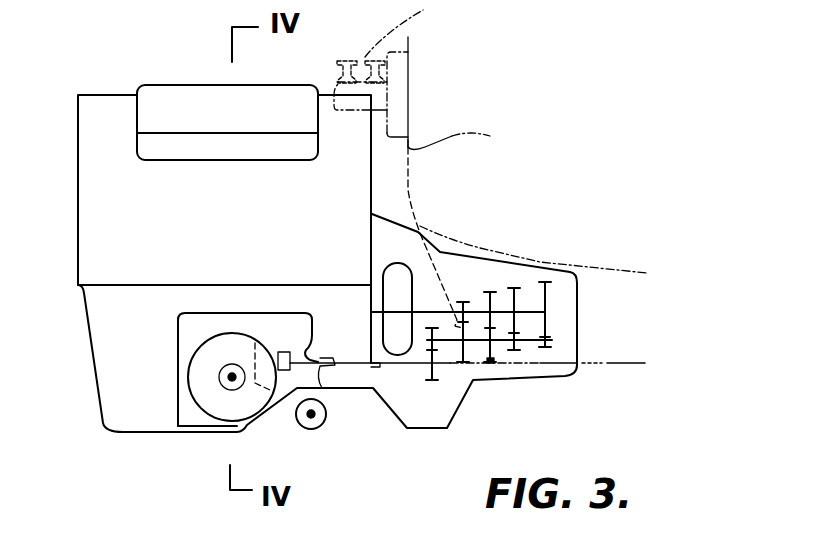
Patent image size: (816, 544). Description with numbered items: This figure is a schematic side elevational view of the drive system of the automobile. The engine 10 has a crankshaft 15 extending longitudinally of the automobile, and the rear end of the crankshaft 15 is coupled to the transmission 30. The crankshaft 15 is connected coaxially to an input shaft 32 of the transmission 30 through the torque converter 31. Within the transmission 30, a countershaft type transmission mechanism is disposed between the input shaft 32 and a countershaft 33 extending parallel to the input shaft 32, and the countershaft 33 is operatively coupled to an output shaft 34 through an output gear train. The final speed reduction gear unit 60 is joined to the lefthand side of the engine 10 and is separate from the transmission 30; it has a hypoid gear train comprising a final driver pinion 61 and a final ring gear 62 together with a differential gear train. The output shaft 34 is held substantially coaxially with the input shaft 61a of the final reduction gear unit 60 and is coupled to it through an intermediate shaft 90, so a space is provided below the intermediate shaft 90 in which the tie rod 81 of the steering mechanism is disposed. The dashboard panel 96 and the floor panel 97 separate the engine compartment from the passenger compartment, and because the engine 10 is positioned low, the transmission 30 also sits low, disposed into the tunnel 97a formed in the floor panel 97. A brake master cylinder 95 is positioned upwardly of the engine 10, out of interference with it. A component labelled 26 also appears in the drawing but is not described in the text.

The engine 10 is at (92, 201).
The motor 26 is at (183, 100).
The brake master cylinder 95 is at (394, 57).
The dashboard panel 96 is at (465, 145).
The crankshaft 15 is at (373, 308).
The torque converter 31 is at (420, 226).
The transmission 30 is at (488, 262).
The input shaft 32 is at (527, 307).
The tunnel 97a is at (610, 293).
The floor panel 97 is at (627, 356).
The final driver pinion 61 is at (268, 313).
The input shaft of the final reduction gear unit 61a is at (318, 358).
The final ring gear 62 is at (207, 343).
The final speed reduction gear unit 60 is at (193, 415).
The tie rod 81 is at (311, 429).
The intermediate shaft 90 is at (357, 368).
The output shaft 34 is at (418, 365).
The countershaft 33 is at (530, 343).